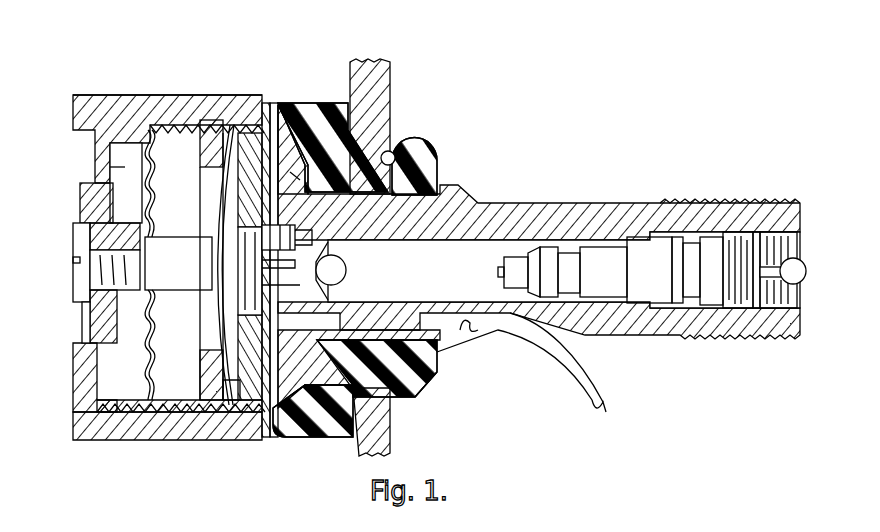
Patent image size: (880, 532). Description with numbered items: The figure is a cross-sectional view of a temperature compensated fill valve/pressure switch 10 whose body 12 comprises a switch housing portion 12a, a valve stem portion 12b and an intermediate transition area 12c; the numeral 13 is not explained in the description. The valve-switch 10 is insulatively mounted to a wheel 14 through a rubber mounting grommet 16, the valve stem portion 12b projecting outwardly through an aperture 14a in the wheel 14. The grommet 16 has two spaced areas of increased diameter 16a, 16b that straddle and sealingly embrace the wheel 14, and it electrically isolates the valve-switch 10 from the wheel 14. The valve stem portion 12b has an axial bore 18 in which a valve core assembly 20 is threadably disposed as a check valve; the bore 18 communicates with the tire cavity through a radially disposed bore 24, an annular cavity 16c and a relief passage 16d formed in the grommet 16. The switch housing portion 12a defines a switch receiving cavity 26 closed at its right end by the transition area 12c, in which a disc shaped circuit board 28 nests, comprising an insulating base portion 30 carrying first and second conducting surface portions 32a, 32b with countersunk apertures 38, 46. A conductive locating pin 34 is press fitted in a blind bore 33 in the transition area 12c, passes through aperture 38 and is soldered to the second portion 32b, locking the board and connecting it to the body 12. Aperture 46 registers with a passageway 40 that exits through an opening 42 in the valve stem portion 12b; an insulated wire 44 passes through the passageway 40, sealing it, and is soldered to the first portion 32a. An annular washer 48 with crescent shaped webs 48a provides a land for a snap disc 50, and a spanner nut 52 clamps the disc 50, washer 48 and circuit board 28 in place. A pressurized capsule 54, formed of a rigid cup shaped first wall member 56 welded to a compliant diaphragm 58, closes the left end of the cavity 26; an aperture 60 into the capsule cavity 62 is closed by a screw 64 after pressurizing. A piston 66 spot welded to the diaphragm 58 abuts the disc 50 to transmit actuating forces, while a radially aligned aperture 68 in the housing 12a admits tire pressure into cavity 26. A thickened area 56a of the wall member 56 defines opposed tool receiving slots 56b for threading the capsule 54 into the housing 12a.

The temperature compensated fill valve/pressure switch 10 is at (624, 128).
The body 12 is at (482, 193).
The switch housing portion 12a is at (122, 93).
The valve stem portion 12b is at (660, 205).
The transition area 12c is at (304, 100).
The sheet reference 13 is at (429, 10).
The wheel 14 is at (393, 77).
The aperture 14a is at (422, 140).
The rubber mounting grommet 16 is at (432, 170).
The area of increased diameter 16a is at (322, 432).
The area of increased diameter 16b is at (420, 397).
The annular cavity 16c is at (338, 112).
The relief passage 16d is at (290, 398).
The axial bore 18 is at (474, 286).
The valve core assembly 20 is at (655, 290).
The radially disposed bore 24 is at (340, 270).
The switch receiving cavity 26 is at (160, 412).
The circuit board 28 is at (299, 176).
The base portion 30 is at (266, 103).
The first conducting surface portion 32a is at (268, 288).
The second conducting surface portion 32b is at (257, 101).
The blind bore 33 is at (270, 268).
The locating pin 34 is at (320, 233).
The aperture 38 is at (300, 230).
The passageway 40 is at (470, 328).
The opening 42 is at (512, 318).
The insulated electrically conducting wire 44 is at (604, 400).
The aperture 46 is at (238, 298).
The annular washer 48 is at (222, 122).
The crescent shaped webs 48a is at (225, 350).
The snap disc 50 is at (215, 205).
The spanner nut 52 is at (200, 158).
The pressurized capsule 54 is at (93, 377).
The first, rigid cup shaped wall member 56 is at (110, 151).
The area of increased wall thickness 56a is at (95, 318).
The tool receiving slots 56b is at (80, 200).
The diaphragm 58 is at (158, 322).
The aperture 60 is at (93, 272).
The switch cavity 62 is at (122, 167).
The screw 64 is at (80, 238).
The piston 66 is at (192, 274).
The radially aligned aperture 68 is at (190, 428).